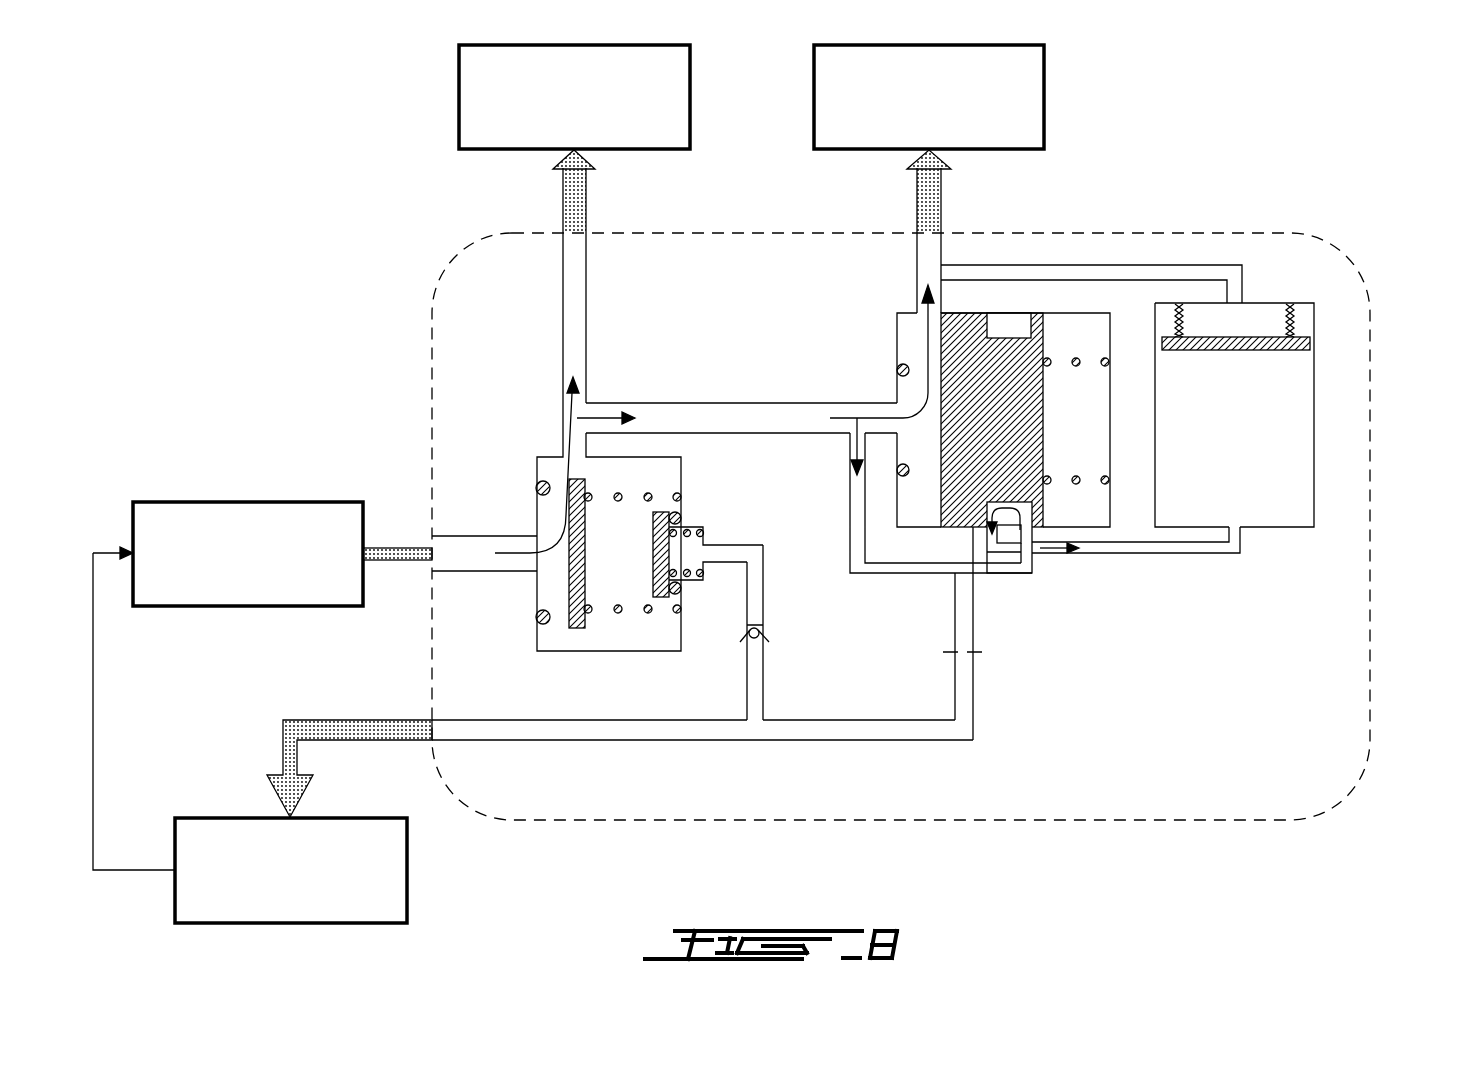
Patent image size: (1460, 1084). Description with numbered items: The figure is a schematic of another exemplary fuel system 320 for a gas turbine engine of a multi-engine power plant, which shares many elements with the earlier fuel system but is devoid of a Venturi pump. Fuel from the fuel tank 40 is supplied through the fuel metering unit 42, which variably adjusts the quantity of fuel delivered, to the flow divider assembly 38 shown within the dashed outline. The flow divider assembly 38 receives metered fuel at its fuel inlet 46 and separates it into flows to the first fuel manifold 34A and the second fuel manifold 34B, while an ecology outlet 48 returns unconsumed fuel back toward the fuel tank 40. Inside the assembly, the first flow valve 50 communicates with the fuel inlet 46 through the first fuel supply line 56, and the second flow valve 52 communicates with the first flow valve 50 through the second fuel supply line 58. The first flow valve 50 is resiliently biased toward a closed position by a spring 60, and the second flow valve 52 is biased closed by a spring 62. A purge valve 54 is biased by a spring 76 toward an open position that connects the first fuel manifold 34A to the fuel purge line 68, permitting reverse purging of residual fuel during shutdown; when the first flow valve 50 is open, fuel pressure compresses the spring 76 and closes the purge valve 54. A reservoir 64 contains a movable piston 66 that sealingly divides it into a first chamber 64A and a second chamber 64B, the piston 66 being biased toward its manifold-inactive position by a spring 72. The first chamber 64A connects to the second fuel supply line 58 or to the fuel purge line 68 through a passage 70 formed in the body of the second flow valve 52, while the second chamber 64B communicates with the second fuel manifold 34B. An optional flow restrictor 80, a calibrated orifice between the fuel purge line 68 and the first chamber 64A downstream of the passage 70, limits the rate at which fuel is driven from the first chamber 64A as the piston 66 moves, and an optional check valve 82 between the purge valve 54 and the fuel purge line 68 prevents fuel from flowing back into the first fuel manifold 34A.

The fuel system 320 is at (312, 190).
The first fuel manifold 34A is at (690, 96).
The second fuel manifold 34B is at (1044, 96).
The flow divider assembly 38 is at (1142, 790).
The fuel tank 40 is at (407, 870).
The fuel metering unit 42 is at (205, 502).
The fuel inlet 46 is at (423, 543).
The ecology outlet 48 is at (425, 722).
The first flow valve 50 is at (569, 568).
The second flow valve 52 is at (963, 322).
The purge valve 54 is at (660, 512).
The first fuel supply line 56 is at (468, 557).
The second fuel supply line 58 is at (750, 403).
The spring 60 is at (618, 610).
The spring 62 is at (1076, 358).
The reservoir 64 is at (1256, 530).
The first chamber 64A is at (1272, 483).
The second chamber 64B is at (1210, 318).
The piston 66 is at (1300, 338).
The fuel purge line 68 is at (572, 740).
The passage 70 is at (1008, 333).
The spring 72 is at (1290, 322).
The spring 76 is at (686, 573).
The flow restrictor 80 is at (962, 657).
The check valve 82 is at (756, 641).